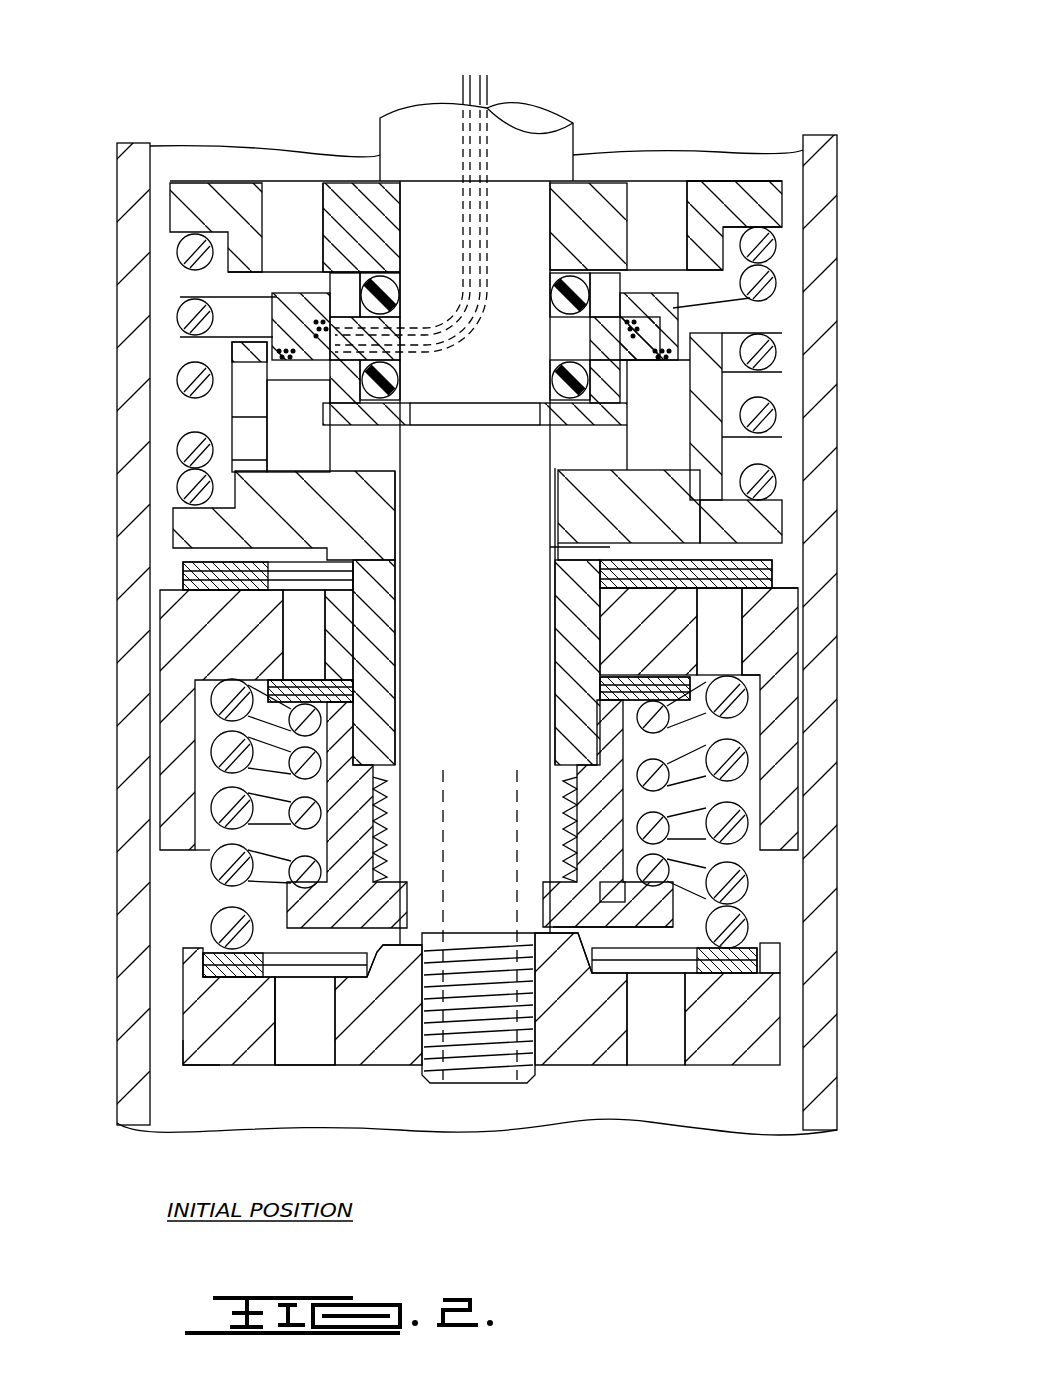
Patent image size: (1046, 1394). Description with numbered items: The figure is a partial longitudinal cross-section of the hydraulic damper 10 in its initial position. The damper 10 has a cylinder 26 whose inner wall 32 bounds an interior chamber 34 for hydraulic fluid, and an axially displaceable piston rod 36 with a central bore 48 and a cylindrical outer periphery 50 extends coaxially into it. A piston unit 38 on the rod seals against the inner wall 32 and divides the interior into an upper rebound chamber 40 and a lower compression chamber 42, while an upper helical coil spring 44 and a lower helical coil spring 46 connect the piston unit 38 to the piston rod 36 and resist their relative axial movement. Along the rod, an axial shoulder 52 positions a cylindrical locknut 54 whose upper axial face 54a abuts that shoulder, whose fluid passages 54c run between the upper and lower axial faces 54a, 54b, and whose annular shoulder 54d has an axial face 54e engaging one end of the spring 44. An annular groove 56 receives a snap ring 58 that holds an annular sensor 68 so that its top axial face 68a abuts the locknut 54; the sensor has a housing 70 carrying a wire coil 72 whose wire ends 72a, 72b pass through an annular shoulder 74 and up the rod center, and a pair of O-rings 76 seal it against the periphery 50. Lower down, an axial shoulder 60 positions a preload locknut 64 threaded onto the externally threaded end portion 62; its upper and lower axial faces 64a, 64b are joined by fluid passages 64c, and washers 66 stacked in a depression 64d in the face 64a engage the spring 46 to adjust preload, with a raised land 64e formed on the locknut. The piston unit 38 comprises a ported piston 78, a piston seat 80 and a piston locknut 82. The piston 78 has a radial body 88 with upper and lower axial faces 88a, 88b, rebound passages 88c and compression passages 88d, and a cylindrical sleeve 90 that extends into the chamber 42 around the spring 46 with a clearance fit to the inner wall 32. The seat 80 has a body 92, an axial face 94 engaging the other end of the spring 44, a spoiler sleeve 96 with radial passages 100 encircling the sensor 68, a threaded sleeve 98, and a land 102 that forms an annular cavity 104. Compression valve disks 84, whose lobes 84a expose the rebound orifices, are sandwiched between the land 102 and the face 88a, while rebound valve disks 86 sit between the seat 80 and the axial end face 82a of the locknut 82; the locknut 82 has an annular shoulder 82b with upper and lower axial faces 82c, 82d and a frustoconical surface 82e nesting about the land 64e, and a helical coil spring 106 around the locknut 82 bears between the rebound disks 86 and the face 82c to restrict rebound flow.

The damper 10 is at (304, 98).
The cylinder 26 is at (116, 180).
The inner wall 32 is at (165, 232).
The interior chamber 34 is at (180, 278).
The piston rod 36 is at (502, 750).
The piston unit 38 is at (204, 180).
The upper rebound chamber 40 is at (630, 165).
The lower compression chamber 42 is at (690, 1098).
The upper helical coil spring 44 is at (172, 325).
The lower helical coil spring 46 is at (205, 877).
The central bore 48 is at (452, 808).
The outer periphery 50 is at (574, 122).
The axial shoulder 52 is at (575, 185).
The locknut 54 is at (778, 168).
The upper axial face 54a is at (738, 178).
The lower axial face 54b is at (712, 276).
The fluid passages 54c is at (690, 185).
The annular shoulder 54d is at (760, 200).
The axial face 54e is at (778, 228).
The annular groove 56 is at (473, 421).
The snap ring 58 is at (603, 418).
The axial shoulder 60 is at (410, 945).
The externally threaded end portion 62 is at (467, 1060).
The preload locknut 64 is at (182, 997).
The upper axial face 64a is at (195, 950).
The lower axial face 64b is at (185, 1066).
The fluid passages 64c is at (280, 1042).
The depression 64d is at (340, 975).
The raised land 64e is at (490, 935).
The washers 66 is at (753, 969).
The annular sensor 68 is at (264, 401).
The top axial face 68a is at (573, 267).
The housing 70 is at (293, 381).
The coil 72 is at (300, 330).
The wire end 72a is at (462, 76).
The wire end 72b is at (488, 76).
The annular shoulder 74 is at (577, 338).
The O-rings 76 is at (556, 296).
The ported piston 78 is at (165, 712).
The piston seat 80 is at (170, 534).
The piston locknut 82 is at (360, 783).
The axial end face 82a is at (358, 694).
The annular shoulder 82b is at (688, 903).
The upper axial face 82c is at (637, 885).
The lower axial face 82d is at (663, 925).
The frustoconical surface 82e is at (597, 935).
The compression valve disks 84 is at (183, 566).
The lobes 84a is at (354, 588).
The rebound valve disks 86 is at (357, 690).
The radial body 88 is at (640, 618).
The upper axial face 88a is at (790, 585).
The lower axial face 88b is at (760, 686).
The rebound passages 88c is at (292, 618).
The compression passages 88d is at (732, 605).
The cylindrical sleeve 90 is at (178, 797).
The body 92 is at (656, 493).
The axial face 94 is at (778, 498).
The sleeve 96 is at (712, 389).
The sleeve 98 is at (573, 657).
The passages 100 is at (708, 449).
The land 102 is at (613, 547).
The annular cavity 104 is at (768, 551).
The helical coil spring 106 is at (680, 765).